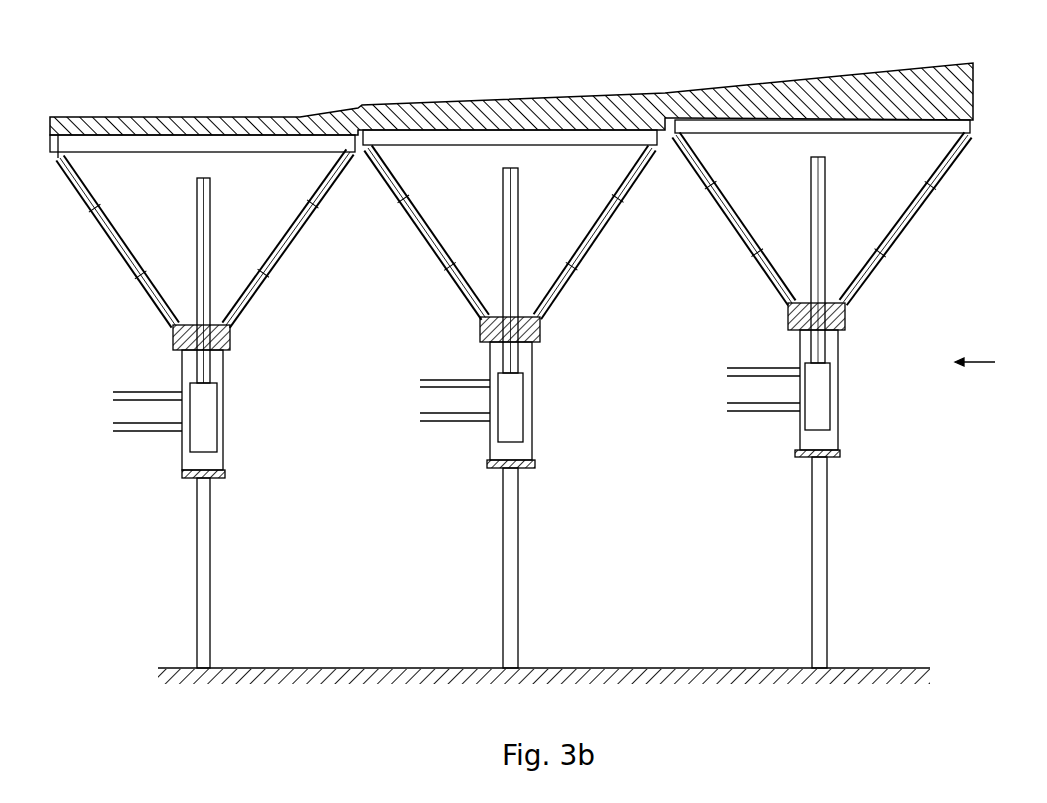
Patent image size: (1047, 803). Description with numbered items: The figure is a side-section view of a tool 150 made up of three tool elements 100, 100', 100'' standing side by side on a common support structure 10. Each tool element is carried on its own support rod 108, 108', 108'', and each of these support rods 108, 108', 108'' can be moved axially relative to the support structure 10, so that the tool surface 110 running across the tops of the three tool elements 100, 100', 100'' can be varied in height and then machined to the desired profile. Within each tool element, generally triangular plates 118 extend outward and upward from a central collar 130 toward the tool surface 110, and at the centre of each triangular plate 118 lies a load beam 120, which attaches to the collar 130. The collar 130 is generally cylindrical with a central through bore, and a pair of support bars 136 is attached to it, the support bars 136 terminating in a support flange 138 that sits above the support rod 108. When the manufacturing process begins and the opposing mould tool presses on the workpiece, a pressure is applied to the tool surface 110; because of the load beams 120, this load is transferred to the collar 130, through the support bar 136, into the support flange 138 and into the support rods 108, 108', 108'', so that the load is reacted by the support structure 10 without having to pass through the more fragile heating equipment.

The tool element 100 is at (203, 205).
The tool element 100' is at (510, 247).
The tool element 100'' is at (821, 241).
The tool surface 110 is at (617, 98).
The triangular plate 118 is at (93, 233).
The load beam 120 is at (140, 290).
The collar 130 is at (230, 340).
The support bar 136 is at (223, 410).
The support flange 138 is at (225, 470).
The support rod 108 is at (243, 573).
The support rod 108' is at (554, 568).
The support rod 108'' is at (864, 562).
The tool 150 is at (995, 362).
The support structure 10 is at (673, 669).